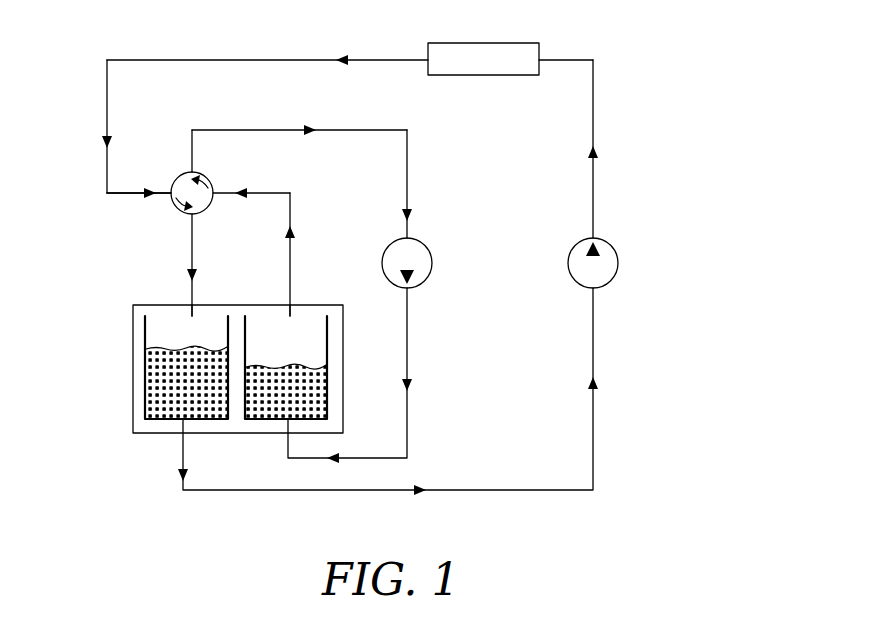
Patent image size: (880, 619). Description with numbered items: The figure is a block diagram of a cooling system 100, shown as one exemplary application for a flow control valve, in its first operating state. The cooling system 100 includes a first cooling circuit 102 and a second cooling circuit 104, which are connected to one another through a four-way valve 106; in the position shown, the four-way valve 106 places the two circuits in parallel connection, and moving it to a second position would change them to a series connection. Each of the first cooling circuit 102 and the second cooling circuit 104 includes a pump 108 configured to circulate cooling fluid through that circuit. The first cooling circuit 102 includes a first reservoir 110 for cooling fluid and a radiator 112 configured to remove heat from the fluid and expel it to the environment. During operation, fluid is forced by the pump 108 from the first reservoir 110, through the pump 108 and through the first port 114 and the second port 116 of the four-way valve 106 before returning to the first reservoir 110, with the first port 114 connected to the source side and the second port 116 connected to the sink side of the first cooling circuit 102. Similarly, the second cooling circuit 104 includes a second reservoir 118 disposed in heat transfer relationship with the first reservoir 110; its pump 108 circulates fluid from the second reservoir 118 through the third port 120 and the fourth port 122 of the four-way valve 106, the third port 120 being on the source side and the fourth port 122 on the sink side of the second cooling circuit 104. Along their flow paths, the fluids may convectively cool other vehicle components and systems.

The cooling system 100 is at (716, 70).
The first cooling circuit 102 is at (595, 432).
The second cooling circuit 104 is at (408, 432).
The 4-way valve 106 is at (175, 179).
The pump 108 is at (425, 250).
The first reservoir 110 is at (167, 382).
The radiator 112 is at (490, 43).
The first port 114 is at (172, 197).
The second port 116 is at (201, 213).
The second reservoir 118 is at (307, 390).
The third port 120 is at (214, 193).
The fourth port 122 is at (194, 174).